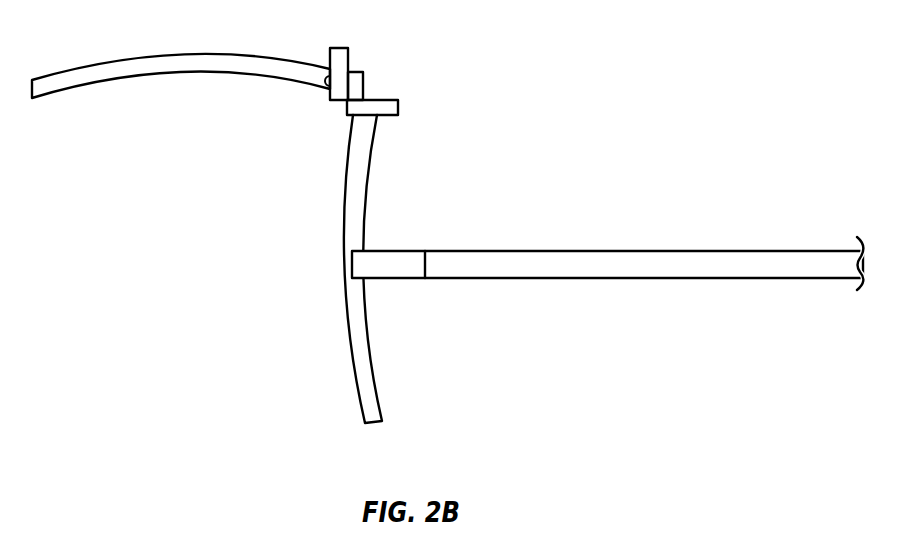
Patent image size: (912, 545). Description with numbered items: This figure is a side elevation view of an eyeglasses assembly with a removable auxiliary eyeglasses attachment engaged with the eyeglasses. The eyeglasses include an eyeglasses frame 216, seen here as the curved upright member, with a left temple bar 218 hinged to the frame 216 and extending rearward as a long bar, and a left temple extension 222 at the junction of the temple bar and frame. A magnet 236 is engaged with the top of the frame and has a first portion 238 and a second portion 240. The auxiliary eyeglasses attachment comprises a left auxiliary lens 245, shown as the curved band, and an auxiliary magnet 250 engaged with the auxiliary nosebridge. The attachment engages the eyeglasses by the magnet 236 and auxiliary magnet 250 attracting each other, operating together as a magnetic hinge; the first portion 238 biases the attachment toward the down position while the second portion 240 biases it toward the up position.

The eyeglasses frame 216 is at (374, 368).
The left temple bar 218 is at (648, 250).
The left temple extension 222 is at (388, 280).
The magnet 236 is at (392, 89).
The first portion 238 is at (400, 106).
The second portion 240 is at (364, 74).
The left auxiliary lens 245 is at (196, 52).
The auxiliary magnet 250 is at (339, 47).